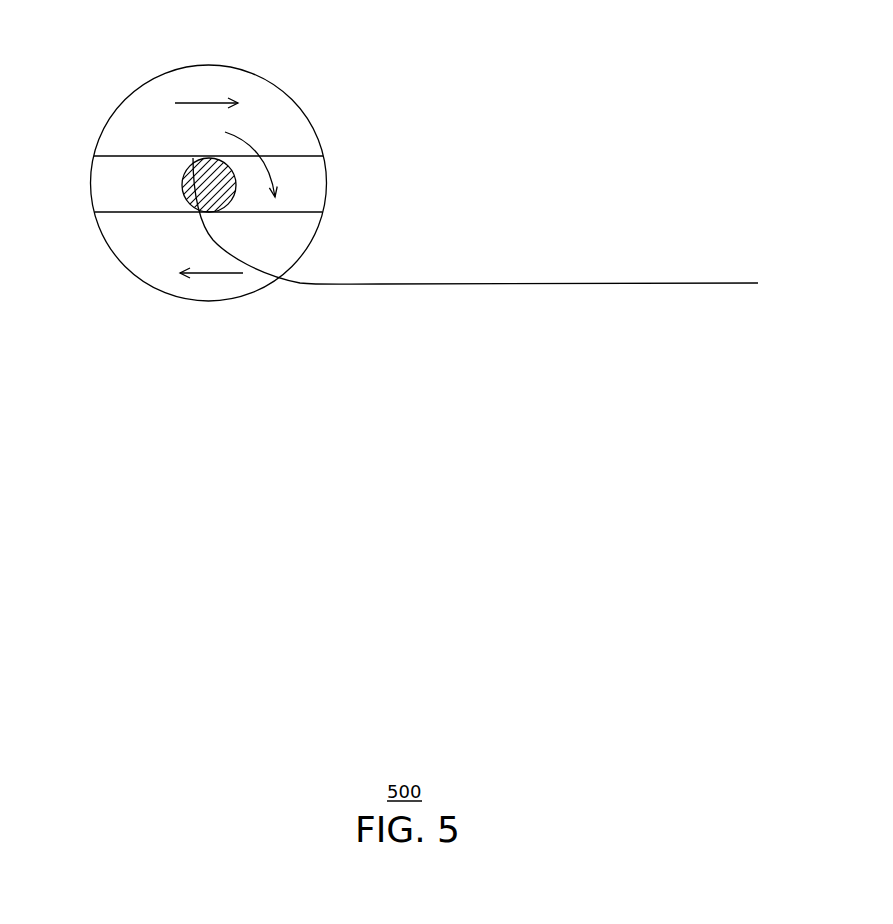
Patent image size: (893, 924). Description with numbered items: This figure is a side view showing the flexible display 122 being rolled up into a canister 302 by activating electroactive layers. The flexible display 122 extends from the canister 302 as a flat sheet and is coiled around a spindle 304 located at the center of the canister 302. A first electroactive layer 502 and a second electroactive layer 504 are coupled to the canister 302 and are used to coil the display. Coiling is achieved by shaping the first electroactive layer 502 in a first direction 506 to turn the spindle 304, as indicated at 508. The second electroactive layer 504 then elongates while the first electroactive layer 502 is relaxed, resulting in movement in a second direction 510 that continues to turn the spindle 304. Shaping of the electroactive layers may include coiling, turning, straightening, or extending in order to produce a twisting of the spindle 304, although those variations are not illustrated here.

The canister 302 is at (163, 80).
The spindle 304 is at (205, 177).
The first electroactive layer 502 is at (117, 157).
The second electroactive layer 504 is at (120, 212).
The rotation direction arrow 506 is at (207, 103).
The turning of the spindle 508 is at (267, 147).
The second direction 510 is at (203, 274).
The flexible display 122 is at (698, 283).